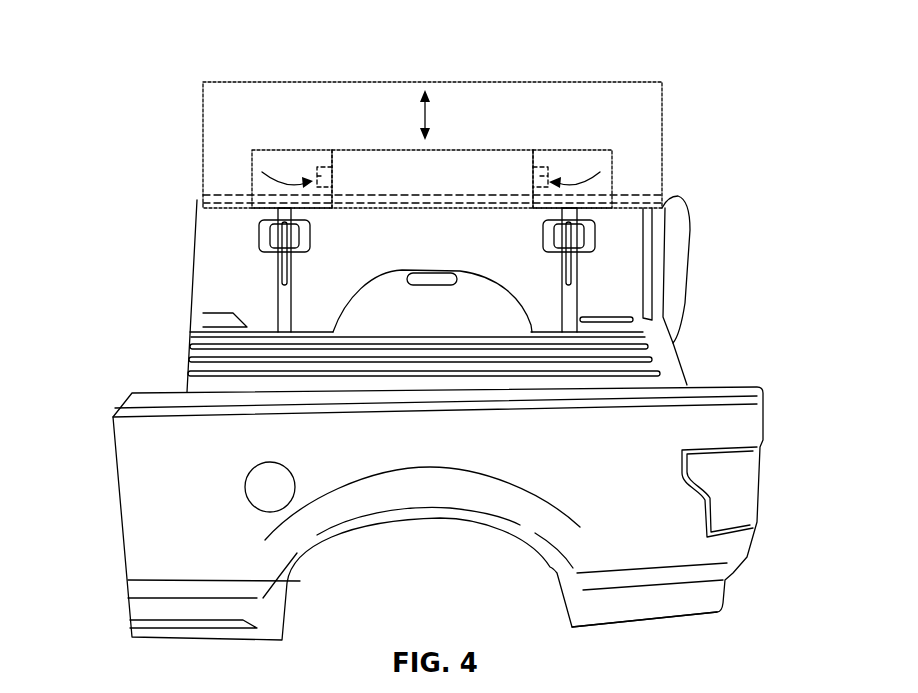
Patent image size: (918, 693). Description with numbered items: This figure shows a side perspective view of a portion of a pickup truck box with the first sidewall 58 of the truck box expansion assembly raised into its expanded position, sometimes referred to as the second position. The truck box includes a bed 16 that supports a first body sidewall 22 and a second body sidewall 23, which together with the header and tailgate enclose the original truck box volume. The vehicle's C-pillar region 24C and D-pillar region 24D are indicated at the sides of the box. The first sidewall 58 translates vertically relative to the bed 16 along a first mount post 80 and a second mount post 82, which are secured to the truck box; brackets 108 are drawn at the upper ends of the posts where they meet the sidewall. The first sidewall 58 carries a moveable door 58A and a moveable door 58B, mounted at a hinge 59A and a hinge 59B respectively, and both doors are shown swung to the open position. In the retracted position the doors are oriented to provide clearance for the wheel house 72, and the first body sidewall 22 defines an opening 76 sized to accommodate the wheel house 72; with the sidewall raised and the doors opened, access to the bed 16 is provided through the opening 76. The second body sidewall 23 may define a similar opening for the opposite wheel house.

The bed 16 is at (620, 368).
The first body sidewall 22 is at (198, 200).
The second body sidewall 23 is at (665, 606).
The C-pillar region 24C is at (194, 195).
The D-pillar region 24D is at (677, 199).
The first sidewall 58 is at (399, 115).
The moveable door 58A is at (272, 152).
The moveable door 58B is at (557, 158).
The hinge 59A is at (317, 178).
The hinge 59B is at (548, 180).
The wheel house 72 is at (402, 300).
The opening 76 is at (503, 150).
The first mount post 80 is at (283, 302).
The second mount post 82 is at (570, 302).
The mounting bracket 108 is at (290, 247).